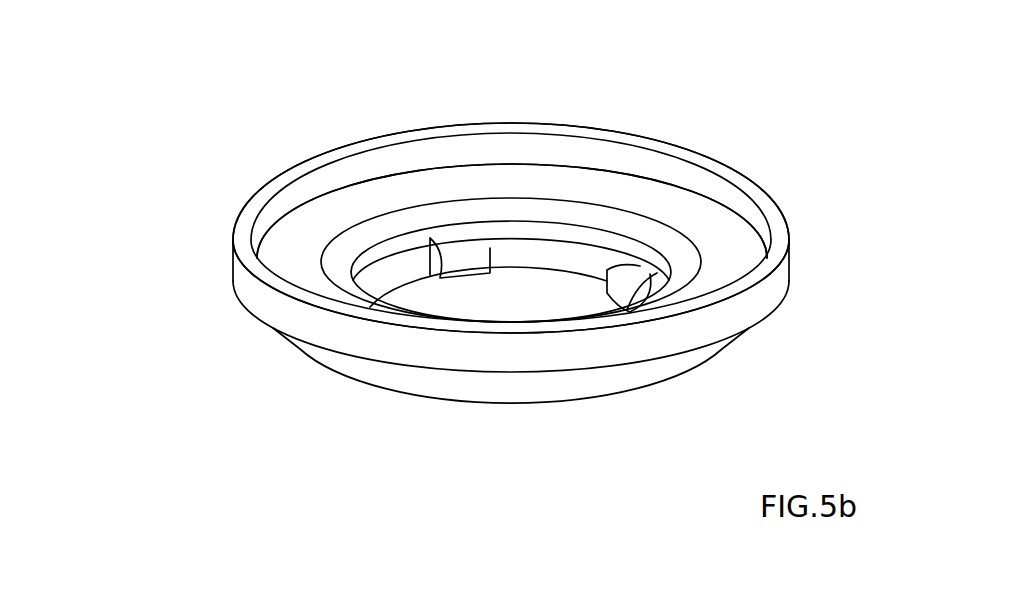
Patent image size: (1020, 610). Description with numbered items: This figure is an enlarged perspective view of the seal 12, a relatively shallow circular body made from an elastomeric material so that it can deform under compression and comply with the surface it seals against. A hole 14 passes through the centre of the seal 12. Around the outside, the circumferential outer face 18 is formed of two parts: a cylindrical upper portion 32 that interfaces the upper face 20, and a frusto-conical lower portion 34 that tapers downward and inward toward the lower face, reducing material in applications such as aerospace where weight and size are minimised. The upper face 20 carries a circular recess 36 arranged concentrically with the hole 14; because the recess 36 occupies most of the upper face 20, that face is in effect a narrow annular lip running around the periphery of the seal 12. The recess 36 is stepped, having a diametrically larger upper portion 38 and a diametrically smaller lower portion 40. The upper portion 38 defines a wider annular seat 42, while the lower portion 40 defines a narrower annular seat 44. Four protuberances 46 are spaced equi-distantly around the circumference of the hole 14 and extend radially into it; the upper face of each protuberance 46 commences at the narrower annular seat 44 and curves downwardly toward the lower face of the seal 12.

The seal 12 is at (784, 153).
The hole 14 is at (557, 290).
The circumferential outer face 18 is at (783, 263).
The upper face 20 is at (777, 223).
The cylindrical upper portion 32 is at (247, 272).
The frusto-conical lower portion 34 is at (735, 332).
The circular recess 36 is at (272, 247).
The upper portion 38 is at (292, 232).
The lower portion 40 is at (340, 267).
The wider annular seat 42 is at (322, 206).
The narrower annular seat 44 is at (402, 245).
The protuberances 46 is at (478, 262).